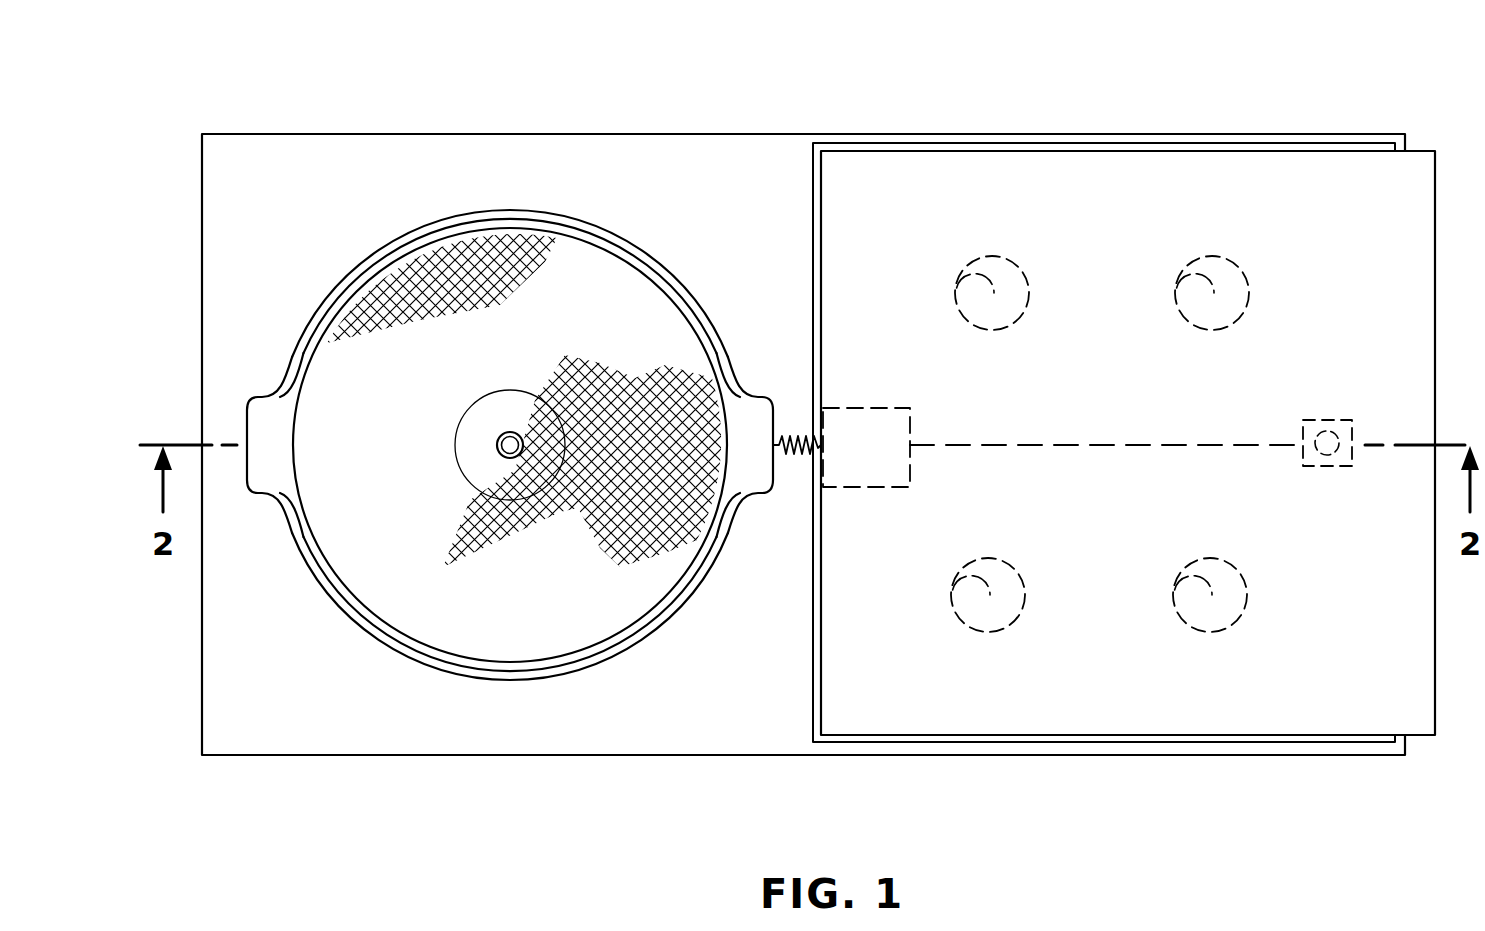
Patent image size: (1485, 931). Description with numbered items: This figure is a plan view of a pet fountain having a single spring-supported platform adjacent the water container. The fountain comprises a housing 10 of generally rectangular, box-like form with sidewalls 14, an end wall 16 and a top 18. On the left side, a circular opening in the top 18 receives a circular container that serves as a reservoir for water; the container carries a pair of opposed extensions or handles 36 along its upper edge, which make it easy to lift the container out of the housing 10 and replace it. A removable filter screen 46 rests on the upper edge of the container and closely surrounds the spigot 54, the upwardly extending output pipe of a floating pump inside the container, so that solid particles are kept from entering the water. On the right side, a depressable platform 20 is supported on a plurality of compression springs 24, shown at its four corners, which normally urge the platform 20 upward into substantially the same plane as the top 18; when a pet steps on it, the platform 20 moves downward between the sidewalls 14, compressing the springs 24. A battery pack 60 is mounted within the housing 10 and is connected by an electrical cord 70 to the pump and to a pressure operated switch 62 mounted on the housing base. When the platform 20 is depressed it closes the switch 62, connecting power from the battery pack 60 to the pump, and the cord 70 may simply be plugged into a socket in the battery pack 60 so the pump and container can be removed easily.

The housing 10 is at (250, 762).
The sidewalls 14 is at (952, 143).
The end wall 16 is at (202, 290).
The top 18 is at (270, 686).
The depressable platform 20 is at (925, 214).
The compression springs 24 is at (1215, 258).
The extensions or handles 36 is at (262, 418).
The removable filter screen 46 is at (458, 243).
The pipe or spigot 54 is at (513, 437).
The battery pack 60 is at (884, 461).
The pressure operated switch 62 is at (1327, 420).
The electrical cord 70 is at (800, 462).